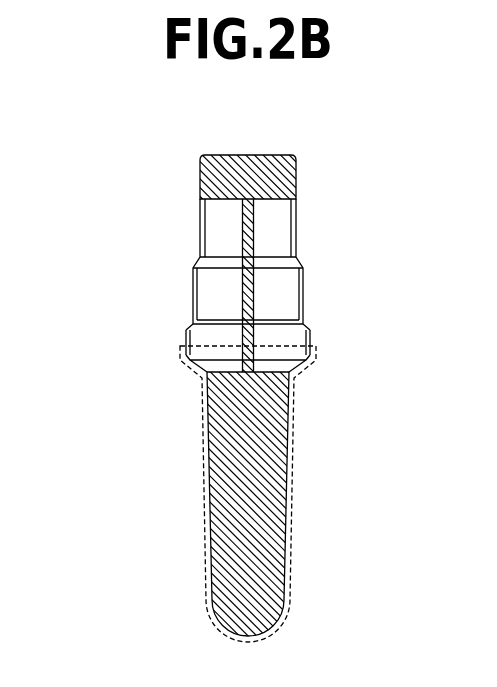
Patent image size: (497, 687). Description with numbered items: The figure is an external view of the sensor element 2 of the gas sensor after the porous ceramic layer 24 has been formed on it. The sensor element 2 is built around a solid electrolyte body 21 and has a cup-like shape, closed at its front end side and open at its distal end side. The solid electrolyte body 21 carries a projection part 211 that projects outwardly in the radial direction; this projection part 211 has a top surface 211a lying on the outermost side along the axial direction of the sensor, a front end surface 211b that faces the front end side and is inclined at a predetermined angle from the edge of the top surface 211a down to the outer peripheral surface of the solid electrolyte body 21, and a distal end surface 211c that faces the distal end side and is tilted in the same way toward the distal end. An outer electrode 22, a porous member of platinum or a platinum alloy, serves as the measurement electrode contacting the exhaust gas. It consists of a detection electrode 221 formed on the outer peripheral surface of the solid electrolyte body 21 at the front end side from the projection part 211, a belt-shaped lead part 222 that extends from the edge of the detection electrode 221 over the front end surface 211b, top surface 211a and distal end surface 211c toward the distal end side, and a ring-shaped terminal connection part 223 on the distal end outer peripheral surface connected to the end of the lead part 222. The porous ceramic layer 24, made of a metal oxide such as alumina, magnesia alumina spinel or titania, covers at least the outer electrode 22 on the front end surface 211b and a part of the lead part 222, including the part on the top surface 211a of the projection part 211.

The sensor element 2 is at (333, 160).
The solid electrolyte body 21 is at (279, 228).
The projection part 211 is at (318, 352).
The top surface 211a is at (312, 338).
The front end surface 211b is at (298, 368).
The distal end surface 211c is at (303, 319).
The outer electrode 22 is at (77, 197).
The detection electrode 221 is at (213, 410).
The lead part 222 is at (242, 293).
The terminal connection part 223 is at (212, 178).
The porous ceramic layer 24 is at (291, 528).